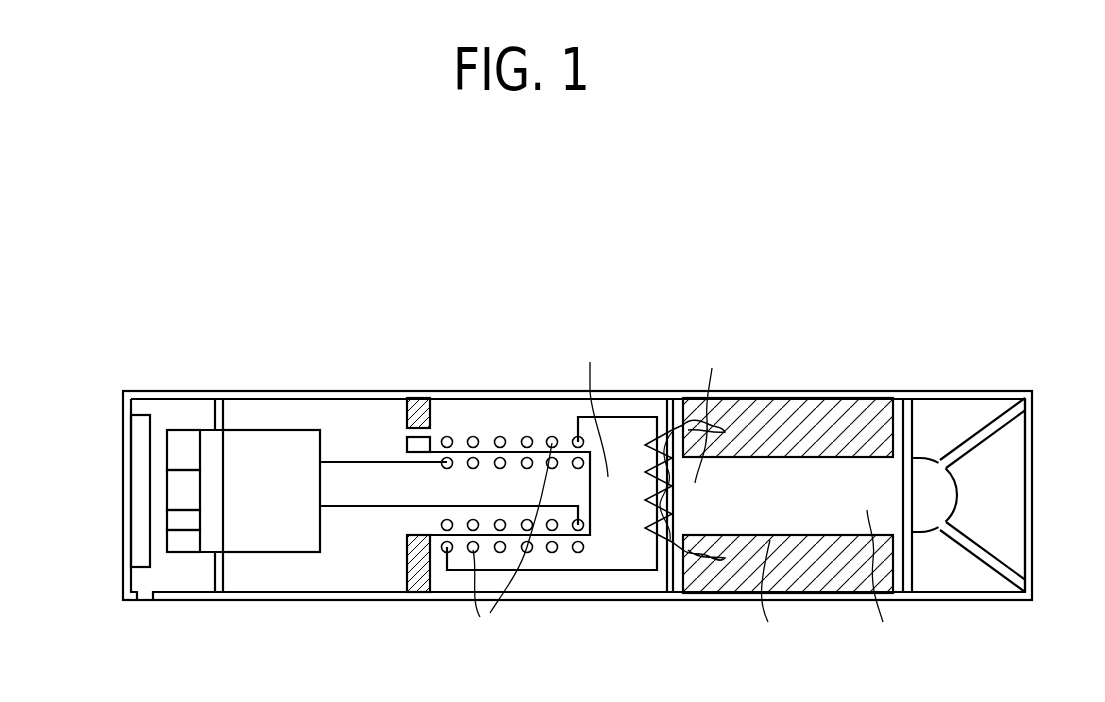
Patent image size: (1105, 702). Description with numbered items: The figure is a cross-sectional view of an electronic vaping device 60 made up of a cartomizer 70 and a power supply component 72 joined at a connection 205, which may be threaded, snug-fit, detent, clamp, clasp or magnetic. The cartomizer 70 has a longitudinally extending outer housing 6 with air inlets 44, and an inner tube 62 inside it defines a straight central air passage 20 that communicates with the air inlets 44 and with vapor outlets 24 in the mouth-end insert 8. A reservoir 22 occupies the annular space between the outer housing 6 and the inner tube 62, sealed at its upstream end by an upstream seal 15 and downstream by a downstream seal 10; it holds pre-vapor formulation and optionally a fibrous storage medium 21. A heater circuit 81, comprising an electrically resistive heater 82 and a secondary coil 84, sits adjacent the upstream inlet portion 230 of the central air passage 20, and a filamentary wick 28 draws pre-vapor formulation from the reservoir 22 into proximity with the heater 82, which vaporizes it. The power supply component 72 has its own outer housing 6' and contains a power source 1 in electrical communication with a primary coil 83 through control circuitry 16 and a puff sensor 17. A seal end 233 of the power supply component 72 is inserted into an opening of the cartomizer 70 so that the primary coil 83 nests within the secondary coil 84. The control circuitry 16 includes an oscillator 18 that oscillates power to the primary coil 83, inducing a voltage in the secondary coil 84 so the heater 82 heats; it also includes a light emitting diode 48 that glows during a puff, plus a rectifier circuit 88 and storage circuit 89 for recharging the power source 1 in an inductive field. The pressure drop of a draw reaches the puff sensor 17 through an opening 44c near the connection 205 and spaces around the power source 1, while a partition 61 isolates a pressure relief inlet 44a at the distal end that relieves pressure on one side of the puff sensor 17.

The power source 1 is at (252, 448).
The outer housing 6 is at (577, 458).
The second outer housing 6' is at (399, 353).
The mouth-end insert 8 is at (1008, 475).
The downstream seal 10 is at (898, 405).
The upstream seal 15 is at (677, 587).
The control circuitry 16 is at (210, 447).
The puff sensor 17 is at (182, 448).
The oscillator 18 is at (183, 487).
The central air passage 20 is at (884, 584).
The storage medium 21 is at (835, 420).
The reservoir 22 is at (827, 567).
The vapor outlets 24 is at (1017, 570).
The wick 28 is at (717, 560).
The air inlets 44 is at (415, 405).
The pressure relief inlet 44a is at (145, 597).
The opening 44c is at (400, 432).
The light emitting diode 48 is at (140, 440).
The electronic vaping device 60 is at (805, 268).
The partition 61 is at (218, 572).
The inner tube 62 is at (771, 598).
The cartomizer 70 is at (664, 312).
The power supply component 72 is at (288, 303).
The heater circuit 81 is at (620, 578).
The electrically resistive heater 82 is at (653, 450).
The primary coil 83 is at (525, 443).
The secondary coil 84 is at (512, 546).
The rectifier circuit 88 is at (183, 540).
The storage circuit 89 is at (182, 522).
The connection 205 is at (410, 570).
The upstream inlet portion 230 is at (715, 410).
The seal end 233 is at (586, 404).